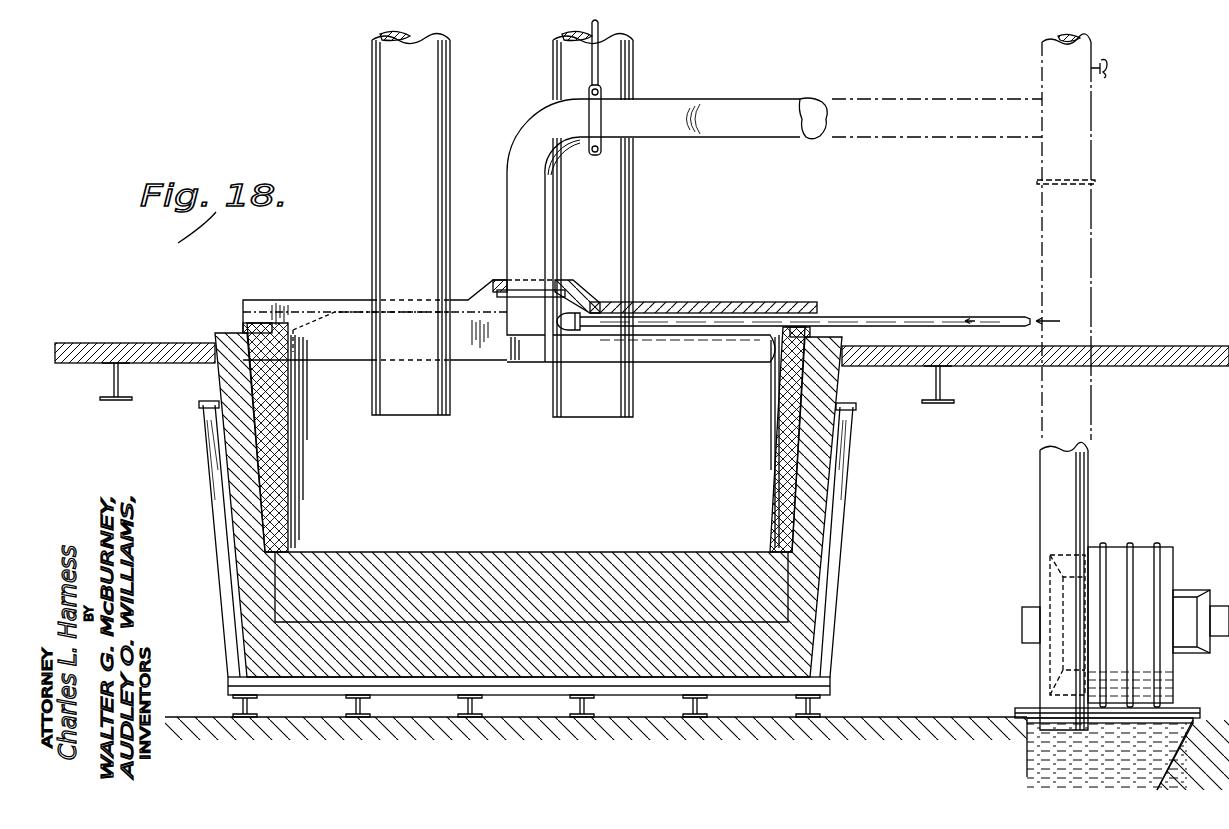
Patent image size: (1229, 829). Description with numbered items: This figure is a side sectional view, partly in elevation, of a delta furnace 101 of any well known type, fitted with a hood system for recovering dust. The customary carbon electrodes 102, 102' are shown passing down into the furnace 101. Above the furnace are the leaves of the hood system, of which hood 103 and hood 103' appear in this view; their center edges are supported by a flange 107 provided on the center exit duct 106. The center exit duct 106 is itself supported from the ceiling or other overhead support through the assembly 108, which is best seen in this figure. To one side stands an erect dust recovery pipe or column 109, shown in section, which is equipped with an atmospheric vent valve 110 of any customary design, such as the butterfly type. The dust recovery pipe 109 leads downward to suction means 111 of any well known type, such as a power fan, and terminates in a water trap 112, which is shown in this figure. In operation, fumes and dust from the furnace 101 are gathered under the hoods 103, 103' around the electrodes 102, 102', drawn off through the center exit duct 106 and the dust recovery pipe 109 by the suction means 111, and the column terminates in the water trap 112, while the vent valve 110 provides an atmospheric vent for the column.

The delta furnace 101 is at (222, 594).
The carbon electrode 102 is at (626, 224).
The carbon electrode 102' is at (378, 223).
The hood leaf 103 is at (476, 268).
The hood leaf 103' is at (808, 298).
The center exit duct 106 is at (509, 166).
The flange 107 is at (493, 290).
The support assembly 108 is at (600, 108).
The dust recovery pipe 109 is at (1091, 277).
The atmospheric vent valve 110 is at (1102, 72).
The suction means 111 is at (1168, 547).
The water trap 112 is at (1015, 720).